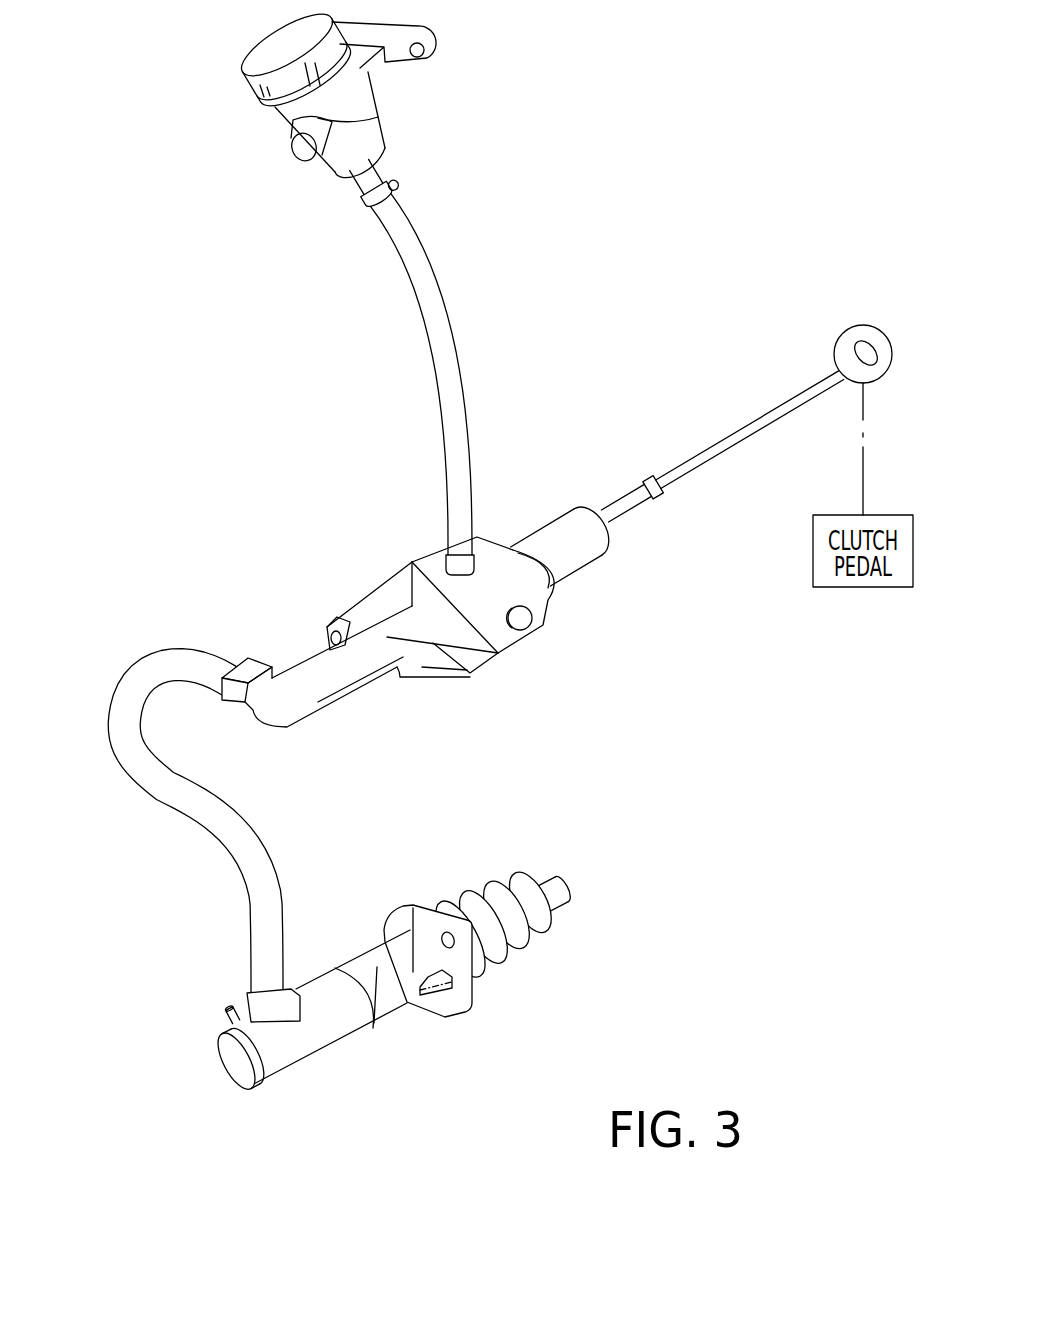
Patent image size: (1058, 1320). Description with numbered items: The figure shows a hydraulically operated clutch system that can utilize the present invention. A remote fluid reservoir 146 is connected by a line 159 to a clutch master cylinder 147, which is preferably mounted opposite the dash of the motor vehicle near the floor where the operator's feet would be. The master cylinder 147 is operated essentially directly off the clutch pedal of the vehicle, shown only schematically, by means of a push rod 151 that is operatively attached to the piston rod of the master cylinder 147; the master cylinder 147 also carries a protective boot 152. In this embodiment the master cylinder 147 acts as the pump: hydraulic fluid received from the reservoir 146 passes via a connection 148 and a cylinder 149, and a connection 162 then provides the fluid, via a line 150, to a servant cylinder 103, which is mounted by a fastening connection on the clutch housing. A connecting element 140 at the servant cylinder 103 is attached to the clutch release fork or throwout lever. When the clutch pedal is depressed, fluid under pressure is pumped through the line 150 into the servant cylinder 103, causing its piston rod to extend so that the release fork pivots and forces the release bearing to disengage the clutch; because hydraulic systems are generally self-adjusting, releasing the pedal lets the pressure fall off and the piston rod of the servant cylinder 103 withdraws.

The servant cylinder 103 is at (418, 948).
The connecting element 140 is at (562, 905).
The remote fluid reservoir 146 is at (378, 97).
The clutch master cylinder 147 is at (498, 505).
The connection 148 is at (443, 553).
The cylinder 149 is at (320, 665).
The line 150 is at (183, 820).
The push rod 151 is at (756, 420).
The protective boot 152 is at (575, 553).
The line 159 is at (428, 258).
The connection 162 is at (243, 1005).